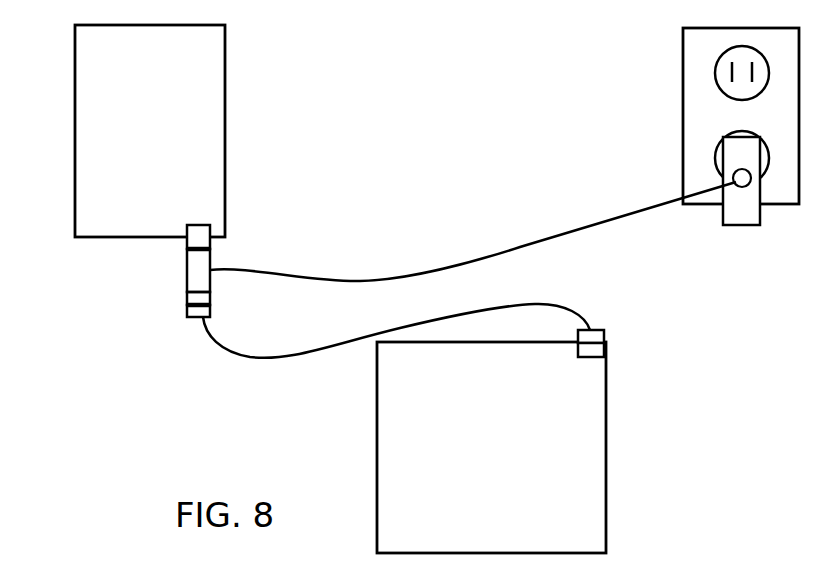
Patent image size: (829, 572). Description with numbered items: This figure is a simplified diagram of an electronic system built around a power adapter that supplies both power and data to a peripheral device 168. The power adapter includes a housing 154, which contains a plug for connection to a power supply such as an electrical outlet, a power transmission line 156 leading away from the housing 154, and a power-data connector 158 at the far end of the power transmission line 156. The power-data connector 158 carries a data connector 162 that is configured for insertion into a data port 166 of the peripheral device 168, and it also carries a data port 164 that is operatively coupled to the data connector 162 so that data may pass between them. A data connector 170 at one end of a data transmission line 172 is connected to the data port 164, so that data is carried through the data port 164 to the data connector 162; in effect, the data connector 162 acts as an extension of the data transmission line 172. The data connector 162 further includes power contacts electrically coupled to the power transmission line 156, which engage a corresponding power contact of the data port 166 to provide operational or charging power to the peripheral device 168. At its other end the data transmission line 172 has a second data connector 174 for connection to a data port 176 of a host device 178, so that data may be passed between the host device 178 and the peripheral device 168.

The housing 154 is at (732, 157).
The power transmission line 156 is at (520, 247).
The power-data connector 158 is at (207, 262).
The data connector 162 is at (198, 244).
The data port 164 is at (197, 297).
The data port 166 is at (200, 229).
The peripheral device 168 is at (210, 62).
The data connector 170 is at (190, 306).
The data transmission line 172 is at (266, 360).
The second data connector 174 is at (604, 338).
The data port 176 is at (604, 354).
The host device 178 is at (553, 397).